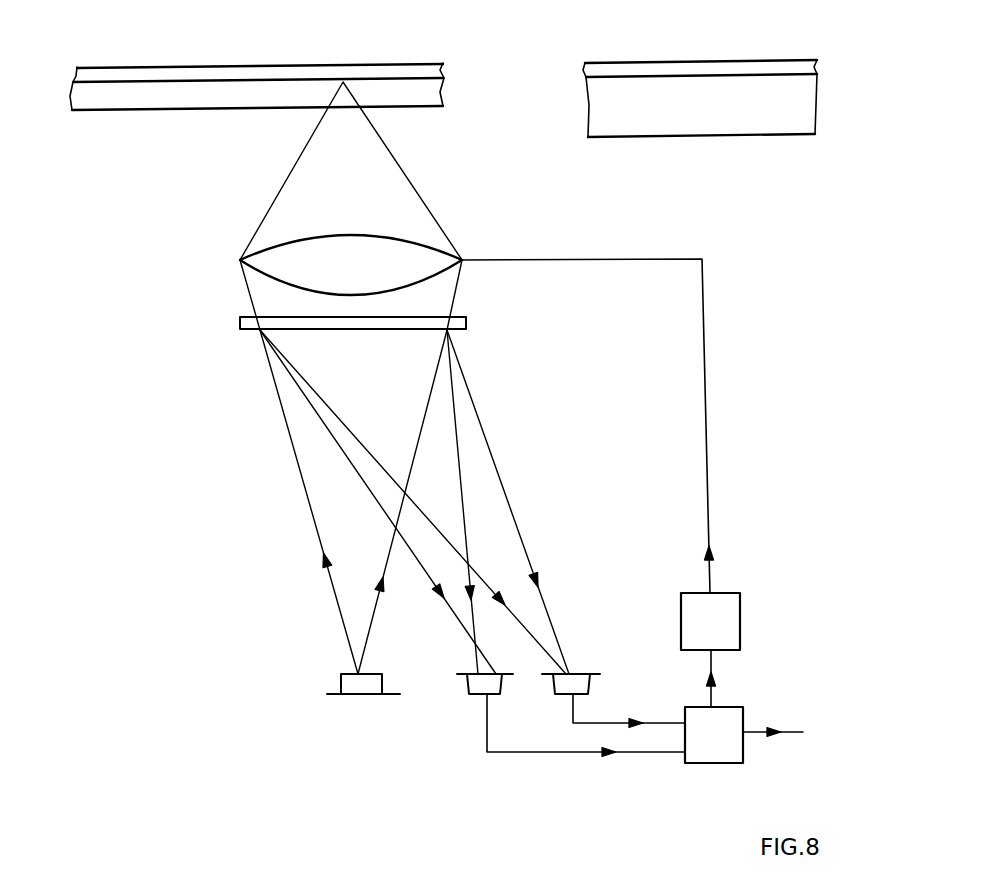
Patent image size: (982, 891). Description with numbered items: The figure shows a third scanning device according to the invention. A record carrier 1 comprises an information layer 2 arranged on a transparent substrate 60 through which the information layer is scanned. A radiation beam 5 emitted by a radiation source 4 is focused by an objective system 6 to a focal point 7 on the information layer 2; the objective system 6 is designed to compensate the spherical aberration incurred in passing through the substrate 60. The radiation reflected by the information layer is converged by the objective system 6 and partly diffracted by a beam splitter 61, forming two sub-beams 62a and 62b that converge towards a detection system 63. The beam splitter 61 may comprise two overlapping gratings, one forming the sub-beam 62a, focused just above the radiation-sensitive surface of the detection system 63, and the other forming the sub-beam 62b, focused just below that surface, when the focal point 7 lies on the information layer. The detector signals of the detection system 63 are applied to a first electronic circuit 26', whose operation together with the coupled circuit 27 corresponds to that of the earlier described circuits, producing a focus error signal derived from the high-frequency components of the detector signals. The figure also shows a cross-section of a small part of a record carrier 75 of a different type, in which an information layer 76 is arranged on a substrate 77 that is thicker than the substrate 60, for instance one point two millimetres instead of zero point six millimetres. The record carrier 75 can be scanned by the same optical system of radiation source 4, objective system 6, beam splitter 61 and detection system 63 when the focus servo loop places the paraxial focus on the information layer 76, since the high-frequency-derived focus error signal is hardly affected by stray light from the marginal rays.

The record carrier 1 is at (70, 82).
The information layer 2 is at (90, 85).
The transparent substrate 60 is at (116, 95).
The focal point 7 is at (343, 82).
The objective system 6 is at (240, 260).
The beam splitter 61 is at (240, 323).
The sub-beam 62a is at (457, 437).
The sub-beam 62b is at (493, 458).
The radiation beam 5 is at (372, 626).
The radiation source 4 is at (383, 683).
The detection system 63 is at (546, 727).
The circuit 27 is at (732, 616).
The first electronic circuit 26' is at (755, 706).
The record carrier 75 is at (894, 77).
The information layer 76 is at (798, 77).
The substrate 77 is at (793, 118).